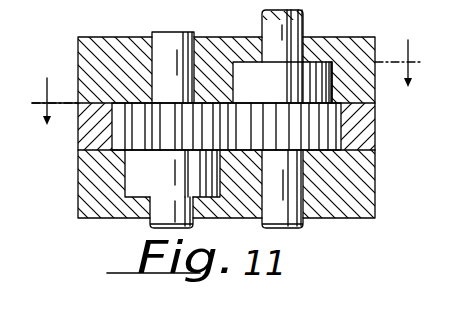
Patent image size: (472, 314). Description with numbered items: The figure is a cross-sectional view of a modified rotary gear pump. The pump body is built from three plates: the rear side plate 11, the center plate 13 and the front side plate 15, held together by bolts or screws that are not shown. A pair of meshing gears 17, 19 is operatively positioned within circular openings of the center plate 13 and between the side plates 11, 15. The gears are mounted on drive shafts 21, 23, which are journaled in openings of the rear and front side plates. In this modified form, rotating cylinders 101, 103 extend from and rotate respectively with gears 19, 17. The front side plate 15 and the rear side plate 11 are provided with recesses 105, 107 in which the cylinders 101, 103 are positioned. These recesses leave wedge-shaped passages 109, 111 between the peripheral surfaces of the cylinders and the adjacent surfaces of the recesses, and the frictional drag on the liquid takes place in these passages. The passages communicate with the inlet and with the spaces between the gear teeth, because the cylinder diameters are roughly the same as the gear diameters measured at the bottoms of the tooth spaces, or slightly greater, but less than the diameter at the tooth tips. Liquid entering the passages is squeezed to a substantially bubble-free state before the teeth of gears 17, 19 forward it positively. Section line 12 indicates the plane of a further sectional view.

The rear side plate 11 is at (80, 206).
The section line 12- 12 is at (227, 70).
The center plate 13 is at (86, 131).
The front side plate 15 is at (85, 52).
The meshing gear 17 is at (163, 153).
The meshing gear 19 is at (275, 110).
The drive shaft 21 is at (156, 33).
The drive shaft 23 is at (265, 28).
The rotating cylinder 101 is at (306, 70).
The rotating cylinder 103 is at (143, 191).
The recess 105 is at (219, 62).
The recess 107 is at (233, 202).
The wedge-shaped passage 109 is at (333, 89).
The wedge-shaped passage 111 is at (120, 169).